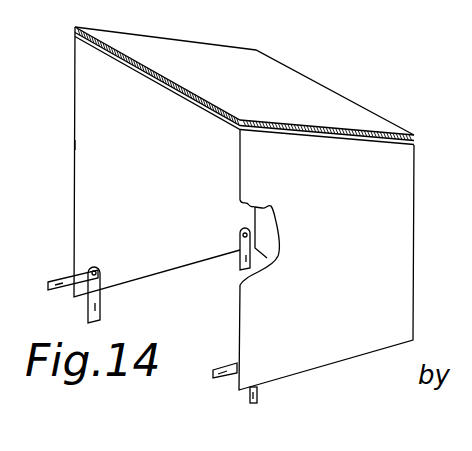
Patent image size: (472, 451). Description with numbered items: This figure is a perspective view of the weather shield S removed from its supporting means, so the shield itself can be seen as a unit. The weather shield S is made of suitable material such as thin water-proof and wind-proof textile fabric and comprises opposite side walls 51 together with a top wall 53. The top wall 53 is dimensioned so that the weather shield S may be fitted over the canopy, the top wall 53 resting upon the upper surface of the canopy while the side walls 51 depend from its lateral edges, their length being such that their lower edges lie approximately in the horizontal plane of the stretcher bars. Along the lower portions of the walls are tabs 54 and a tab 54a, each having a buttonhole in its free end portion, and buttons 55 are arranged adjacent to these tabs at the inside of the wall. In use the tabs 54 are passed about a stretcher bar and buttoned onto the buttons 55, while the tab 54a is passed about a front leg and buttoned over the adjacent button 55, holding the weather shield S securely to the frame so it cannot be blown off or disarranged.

The weather shield S is at (394, 117).
The side walls 51 is at (90, 143).
The top wall 53 is at (293, 80).
The tabs 54 is at (100, 305).
The tab 54a is at (63, 277).
The buttons 55 is at (93, 270).